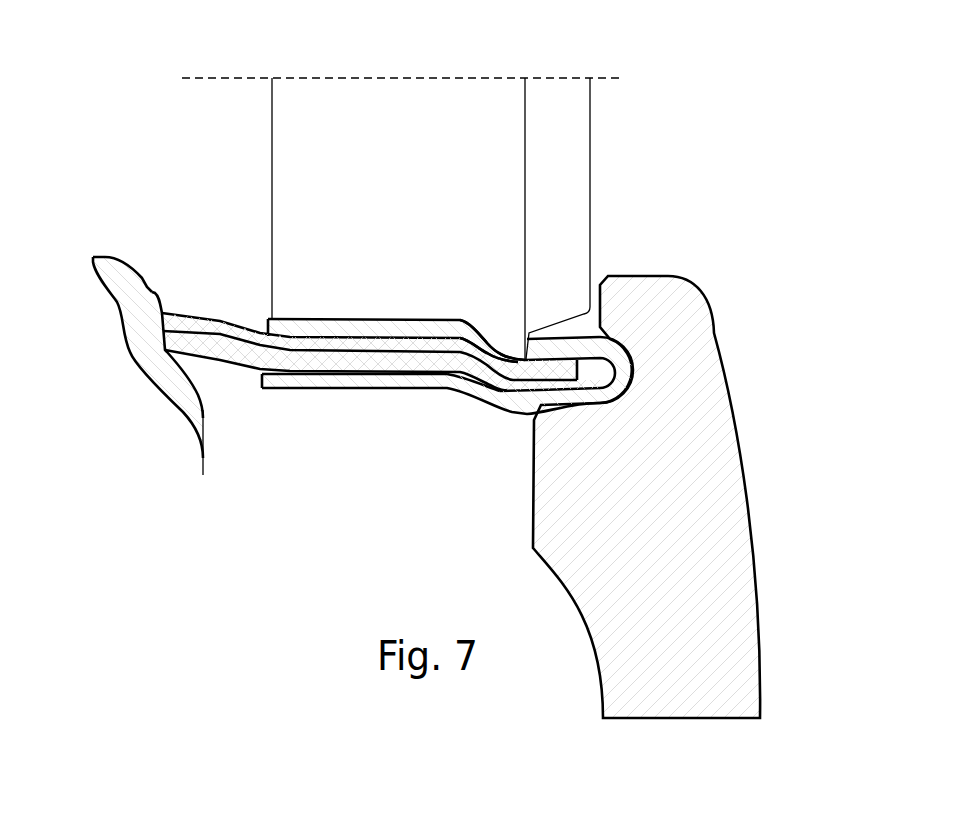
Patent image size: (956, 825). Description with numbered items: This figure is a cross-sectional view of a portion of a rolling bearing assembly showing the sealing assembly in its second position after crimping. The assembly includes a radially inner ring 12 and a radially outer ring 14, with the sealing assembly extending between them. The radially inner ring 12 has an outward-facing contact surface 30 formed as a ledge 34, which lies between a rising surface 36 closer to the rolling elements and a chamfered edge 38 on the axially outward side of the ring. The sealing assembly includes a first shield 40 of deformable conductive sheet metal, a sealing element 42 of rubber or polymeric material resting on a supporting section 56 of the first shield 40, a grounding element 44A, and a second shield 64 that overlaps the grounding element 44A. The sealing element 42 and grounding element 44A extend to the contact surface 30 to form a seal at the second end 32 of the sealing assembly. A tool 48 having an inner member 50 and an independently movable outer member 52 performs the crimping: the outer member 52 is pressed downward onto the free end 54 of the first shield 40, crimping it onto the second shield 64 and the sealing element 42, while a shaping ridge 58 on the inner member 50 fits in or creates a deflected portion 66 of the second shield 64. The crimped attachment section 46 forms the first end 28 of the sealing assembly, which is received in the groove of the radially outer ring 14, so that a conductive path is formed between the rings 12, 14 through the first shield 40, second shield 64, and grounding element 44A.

The radially inner ring 12 is at (182, 378).
The radially outer ring 14 is at (737, 538).
The first end 28 is at (618, 332).
The contact surface 30 is at (160, 307).
The second end 32 is at (174, 294).
The ledge 34 is at (162, 335).
The rising surface 36 is at (187, 360).
The chamfered edge 38 is at (130, 257).
The first shield 40 is at (332, 382).
The sealing element 42 is at (223, 362).
The grounding element 44A is at (212, 320).
The attachment section 46 is at (660, 368).
The tool 48 is at (262, 127).
The inner member 50 is at (483, 102).
The outer member 52 is at (573, 136).
The free end 54 is at (528, 332).
The supporting section 56 is at (483, 398).
The shaping ridge 58 is at (525, 358).
The second shield 64 is at (394, 318).
The deflected portion 66 is at (524, 357).